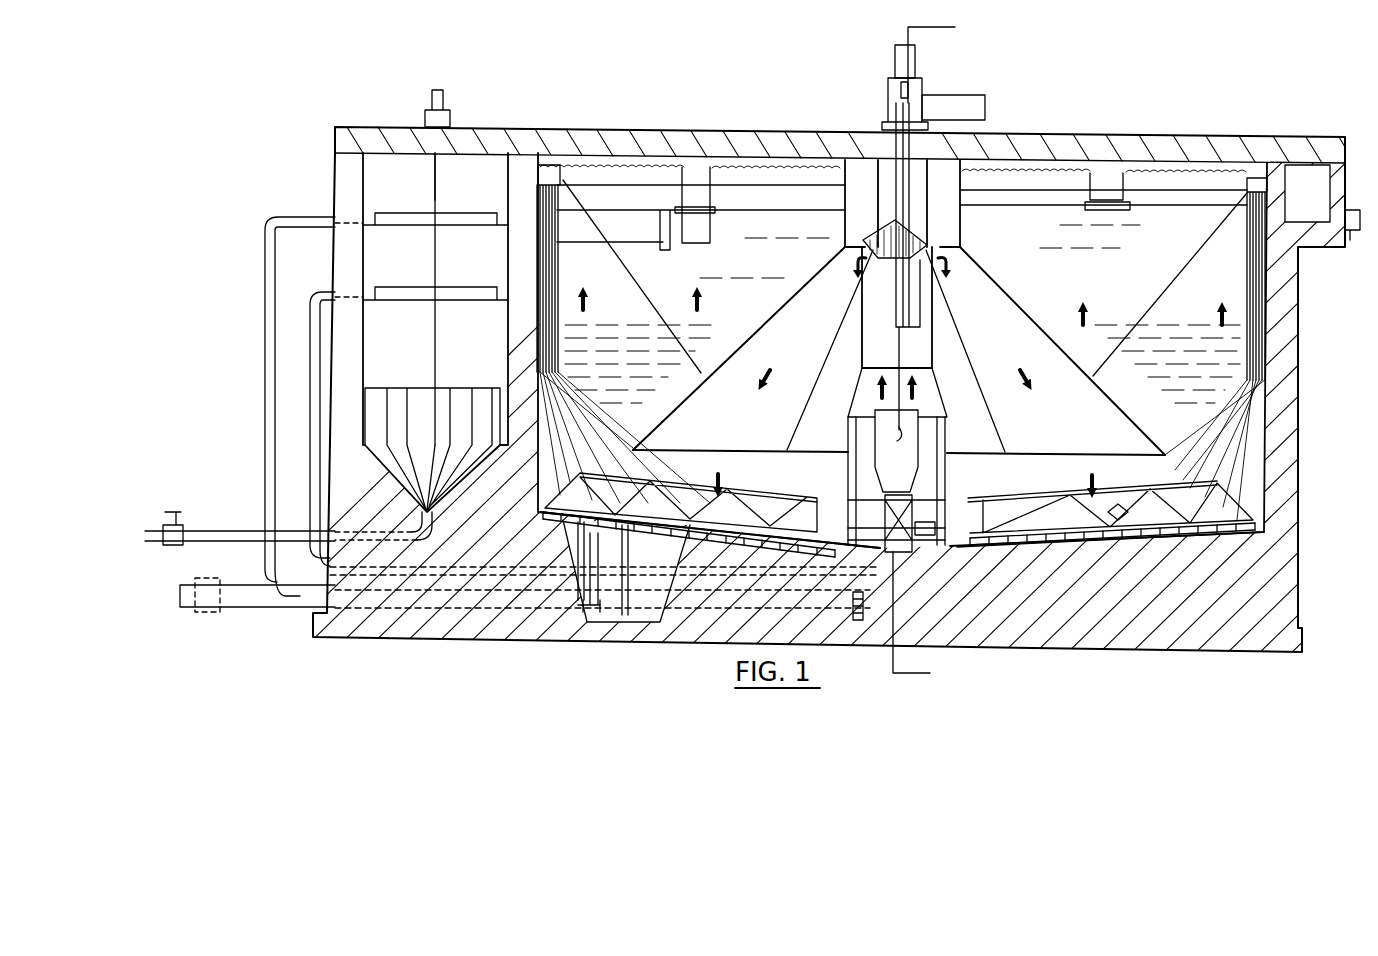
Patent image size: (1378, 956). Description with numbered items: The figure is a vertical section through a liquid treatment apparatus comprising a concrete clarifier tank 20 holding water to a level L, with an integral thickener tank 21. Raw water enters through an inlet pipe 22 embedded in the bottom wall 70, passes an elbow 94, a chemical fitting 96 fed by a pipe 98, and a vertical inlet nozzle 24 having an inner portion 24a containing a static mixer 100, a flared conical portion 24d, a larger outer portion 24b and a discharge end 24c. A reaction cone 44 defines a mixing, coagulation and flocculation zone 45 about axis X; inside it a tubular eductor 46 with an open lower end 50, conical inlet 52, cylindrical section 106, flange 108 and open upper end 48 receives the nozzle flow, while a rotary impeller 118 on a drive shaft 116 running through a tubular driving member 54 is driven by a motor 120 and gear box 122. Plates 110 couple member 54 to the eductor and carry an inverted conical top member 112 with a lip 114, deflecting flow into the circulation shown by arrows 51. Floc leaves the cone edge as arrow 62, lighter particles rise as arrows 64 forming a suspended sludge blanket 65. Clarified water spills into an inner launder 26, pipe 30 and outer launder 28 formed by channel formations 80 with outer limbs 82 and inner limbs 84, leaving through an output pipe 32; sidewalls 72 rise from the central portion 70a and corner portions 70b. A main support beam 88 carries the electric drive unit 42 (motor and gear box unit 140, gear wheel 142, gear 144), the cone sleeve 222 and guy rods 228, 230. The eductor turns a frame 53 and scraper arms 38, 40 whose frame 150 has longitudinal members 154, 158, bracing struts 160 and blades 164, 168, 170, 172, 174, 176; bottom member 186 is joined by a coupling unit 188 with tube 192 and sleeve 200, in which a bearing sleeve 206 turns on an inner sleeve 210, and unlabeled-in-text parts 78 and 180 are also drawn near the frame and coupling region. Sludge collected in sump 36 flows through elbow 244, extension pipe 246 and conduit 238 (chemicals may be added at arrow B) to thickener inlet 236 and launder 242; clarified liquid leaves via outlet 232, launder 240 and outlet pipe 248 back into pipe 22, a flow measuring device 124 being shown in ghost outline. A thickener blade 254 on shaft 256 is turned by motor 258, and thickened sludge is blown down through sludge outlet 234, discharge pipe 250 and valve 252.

The clarifier tank 20 is at (1298, 428).
The thickener tank 21 is at (335, 265).
The raw water inlet pipe 22 is at (730, 603).
The inlet nozzle 24 is at (925, 432).
The inner portion of nozzle 24a is at (925, 502).
The outer portion of nozzle 24b is at (925, 449).
The discharge end 24c is at (920, 415).
The outwardly flared conical portion 24d is at (922, 484).
The inner launder 26 is at (700, 178).
The outer launder 28 is at (1294, 198).
The pipe 30 is at (607, 220).
The treated water output pipe 32 is at (1355, 230).
The sump 36 is at (626, 571).
The scraper arm 38 is at (719, 460).
The scraper arm 40 is at (1093, 462).
The electric drive unit 42 is at (972, 108).
The reaction cone 44 is at (1022, 300).
The mixing, coagulation and flocculation zone 45 is at (893, 310).
The eductor member 46 is at (942, 330).
The open upper end 48 is at (948, 318).
The open lower end 50 is at (855, 422).
The arrows 51 is at (904, 269).
The conical inlet 52 is at (853, 395).
The frame 53 is at (845, 463).
The tubular driving member 54 is at (895, 307).
The arrow 62 is at (640, 450).
The arrows 64 is at (902, 342).
The suspended sludge blanket 65 is at (643, 322).
The bottom wall 70 is at (829, 389).
The circular central portion 70a is at (806, 580).
The downwardly sloping corner portions 70b is at (537, 478).
The sidewalls 72 is at (530, 355).
The bearing 78 is at (838, 494).
The channel-shaped formations 80 is at (1338, 250).
The outer limb 82 is at (1340, 198).
The inner limb 84 is at (1308, 235).
The main support beam 88 is at (618, 165).
The elbow 94 is at (903, 592).
The fitting 96 is at (854, 597).
The pipe 98 is at (975, 560).
The static mixer 100 is at (855, 503).
The cylindrical section 106 is at (930, 362).
The outwardly projecting flange 108 is at (938, 288).
The plates 110 is at (876, 322).
The top member 112 is at (924, 240).
The downwardly inclined lip 114 is at (950, 251).
The drive shaft 116 is at (897, 350).
The rotary impeller 118 is at (896, 451).
The drive motor 120 is at (920, 62).
The gear box 122 is at (888, 88).
The flow measuring device 124 is at (210, 578).
The combined electric motor and speed reducing gear box unit 140 is at (948, 96).
The gear wheel 142 is at (912, 92).
The gear 144 is at (891, 107).
The frame 150 is at (1185, 492).
The longitudinal member 154 is at (1176, 520).
The longitudinal member 158 is at (1148, 492).
The bracing struts 160 is at (1114, 506).
The scraper blade 164 is at (1035, 545).
The scraper blade 168 is at (1143, 540).
The scraper blade 170 is at (1222, 536).
The scraper blade 172 is at (778, 548).
The scraper blade 174 is at (635, 568).
The scraper blade 176 is at (567, 561).
The hub plate 180 is at (966, 520).
The bottom longitudinal member 186 is at (752, 548).
The coupling unit 188 is at (840, 552).
The tube 192 is at (945, 540).
The sleeve 200 is at (880, 556).
The bearing sleeve 206 is at (945, 565).
The inner metal sleeve 210 is at (922, 540).
The octagonal sleeve 222 is at (962, 220).
The guy rod 228 is at (634, 271).
The guy rod 230 is at (1185, 275).
The clarified liquid outlet 232 is at (367, 199).
The sludge outlet 234 is at (410, 520).
The inlet 236 is at (368, 276).
The conduit 238 is at (475, 572).
The launder 240 is at (380, 214).
The launder 242 is at (373, 296).
The elbow 244 is at (583, 590).
The extension pipe 246 is at (590, 606).
The outlet pipe 248 is at (265, 400).
The discharge pipe 250 is at (198, 530).
The valve 252 is at (183, 520).
The thickener blade 254 is at (442, 382).
The vertical drive shaft 256 is at (437, 257).
The electric drive motor 258 is at (446, 99).
The arrow B is at (310, 337).
The liquid level L is at (1262, 176).
The vertical axis X is at (959, 353).